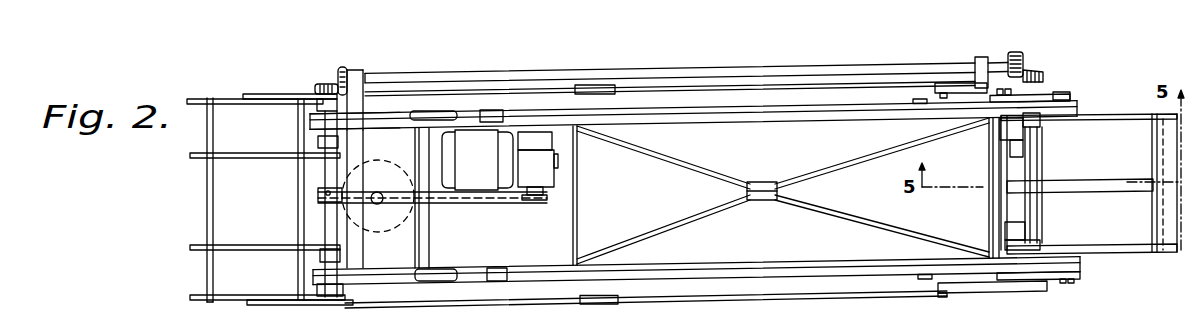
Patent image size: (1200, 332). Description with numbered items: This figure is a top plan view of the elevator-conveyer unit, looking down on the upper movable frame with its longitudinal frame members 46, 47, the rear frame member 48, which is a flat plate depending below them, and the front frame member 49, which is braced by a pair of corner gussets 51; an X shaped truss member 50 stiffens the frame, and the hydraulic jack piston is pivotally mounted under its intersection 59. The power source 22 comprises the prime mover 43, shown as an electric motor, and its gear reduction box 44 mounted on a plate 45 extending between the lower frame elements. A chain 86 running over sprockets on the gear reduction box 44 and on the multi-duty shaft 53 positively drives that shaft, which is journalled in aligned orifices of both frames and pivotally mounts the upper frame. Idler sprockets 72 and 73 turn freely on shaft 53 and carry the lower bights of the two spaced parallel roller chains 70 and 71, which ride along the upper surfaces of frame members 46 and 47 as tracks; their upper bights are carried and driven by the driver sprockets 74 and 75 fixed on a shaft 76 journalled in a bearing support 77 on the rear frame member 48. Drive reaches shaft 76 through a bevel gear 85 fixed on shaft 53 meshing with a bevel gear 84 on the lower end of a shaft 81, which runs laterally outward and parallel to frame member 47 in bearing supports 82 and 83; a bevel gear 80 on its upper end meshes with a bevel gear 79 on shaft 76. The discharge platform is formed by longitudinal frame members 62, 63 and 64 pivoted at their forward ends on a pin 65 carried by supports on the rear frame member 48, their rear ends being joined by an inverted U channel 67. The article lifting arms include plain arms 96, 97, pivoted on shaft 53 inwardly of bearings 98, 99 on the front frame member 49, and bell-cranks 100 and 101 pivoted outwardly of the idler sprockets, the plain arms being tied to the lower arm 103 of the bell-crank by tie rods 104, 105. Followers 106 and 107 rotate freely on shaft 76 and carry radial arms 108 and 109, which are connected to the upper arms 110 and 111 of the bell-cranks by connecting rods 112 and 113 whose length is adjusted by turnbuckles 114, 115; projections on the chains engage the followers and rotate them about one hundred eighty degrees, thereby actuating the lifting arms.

The power source 22 is at (530, 138).
The prime mover 43 is at (477, 160).
The gear reduction box 44 is at (545, 156).
The plate 45 is at (540, 230).
The longitudinal frame member 46 is at (709, 258).
The longitudinal frame member 47 is at (694, 122).
The rear frame member 48 is at (988, 165).
The front frame member 49 is at (372, 240).
The X shaped truss member 50 is at (838, 166).
The corner gussets 51 is at (371, 135).
The multi-duty shaft 53 is at (330, 213).
The intersection 59 is at (764, 180).
The longitudinal frame member 62 is at (1128, 115).
The longitudinal frame member 63 is at (1080, 169).
The longitudinal frame member 64 is at (1138, 250).
The pin 65 is at (1028, 158).
The channel 67 is at (1163, 212).
The chain 70 is at (781, 263).
The chain 71 is at (826, 118).
The idler sprocket 72 is at (305, 291).
The idler sprocket 73 is at (312, 118).
The driver sprocket 74 is at (1082, 268).
The driver sprocket 75 is at (1080, 104).
The shaft 76 is at (1037, 210).
The bearing support 77 is at (1043, 245).
The bevel gear 79 is at (1038, 73).
The bevel gear 80 is at (1018, 54).
The shaft 81 is at (763, 70).
The bearing support 82 is at (981, 57).
The bearing support 83 is at (362, 72).
The bevel gear 84 is at (341, 67).
The bevel gear 85 is at (318, 86).
The chain 86 is at (462, 203).
The plain arm 96 is at (268, 248).
The plain arm 97 is at (262, 158).
The bearing 98 is at (320, 257).
The bearing 99 is at (318, 145).
The bell-crank 100 is at (232, 302).
The bell-crank 101 is at (197, 97).
The lower arm 103 is at (228, 97).
The tie rod 104 is at (207, 187).
The tie rod 105 is at (300, 190).
The follower 106 is at (1058, 280).
The follower 107 is at (1060, 94).
The radial arm 108 is at (980, 284).
The radial arm 109 is at (952, 86).
The upper arm 110 is at (297, 297).
The upper arm 111 is at (262, 104).
The connecting rod 112 is at (708, 298).
The connecting rod 113 is at (667, 92).
The turnbuckle 114 is at (600, 303).
The turnbuckle 115 is at (593, 87).